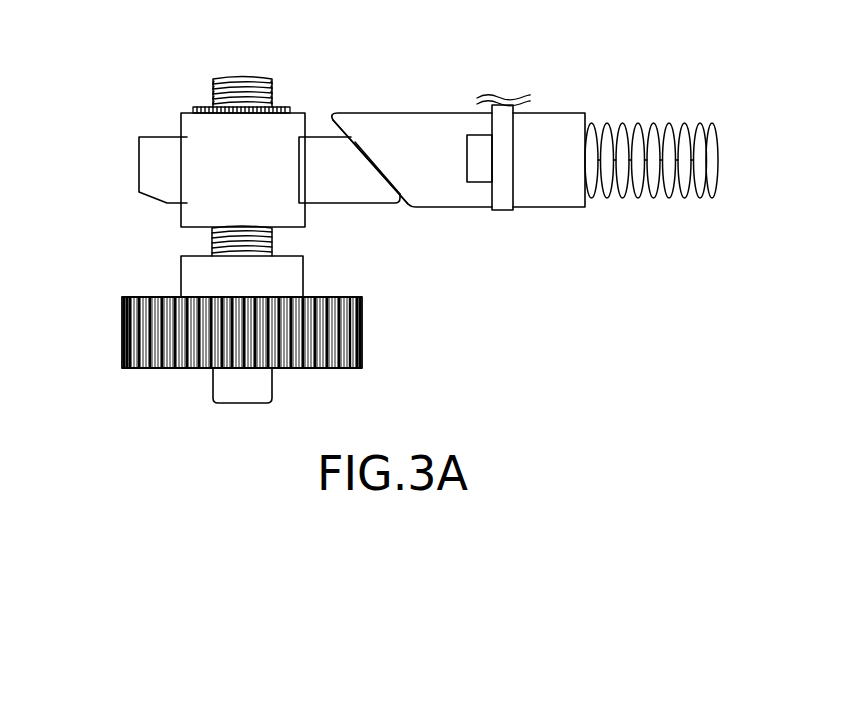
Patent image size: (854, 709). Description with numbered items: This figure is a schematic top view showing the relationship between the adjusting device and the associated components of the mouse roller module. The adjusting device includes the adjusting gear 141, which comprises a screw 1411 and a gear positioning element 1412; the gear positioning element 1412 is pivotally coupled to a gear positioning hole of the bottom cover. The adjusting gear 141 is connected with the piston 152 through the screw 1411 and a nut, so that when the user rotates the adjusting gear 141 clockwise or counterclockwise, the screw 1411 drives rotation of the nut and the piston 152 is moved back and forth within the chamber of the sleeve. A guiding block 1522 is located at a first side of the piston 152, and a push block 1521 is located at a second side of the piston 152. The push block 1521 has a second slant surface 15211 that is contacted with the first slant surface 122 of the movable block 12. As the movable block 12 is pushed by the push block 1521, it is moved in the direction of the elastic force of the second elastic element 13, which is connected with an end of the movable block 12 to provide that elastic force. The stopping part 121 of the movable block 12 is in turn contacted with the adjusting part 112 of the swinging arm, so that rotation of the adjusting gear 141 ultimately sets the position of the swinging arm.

The movable block 12 is at (550, 125).
The adjusting part 112 is at (506, 190).
The stopping part 121 is at (477, 170).
The first slant surface 122 is at (405, 205).
The second elastic element 13 is at (663, 125).
The adjusting gear 141 is at (137, 335).
The screw 1411 is at (240, 76).
The gear positioning element 1412 is at (227, 383).
The piston 152 is at (196, 132).
The push block 1521 is at (324, 152).
The second slant surface 15211 is at (390, 185).
The guiding block 1522 is at (153, 180).